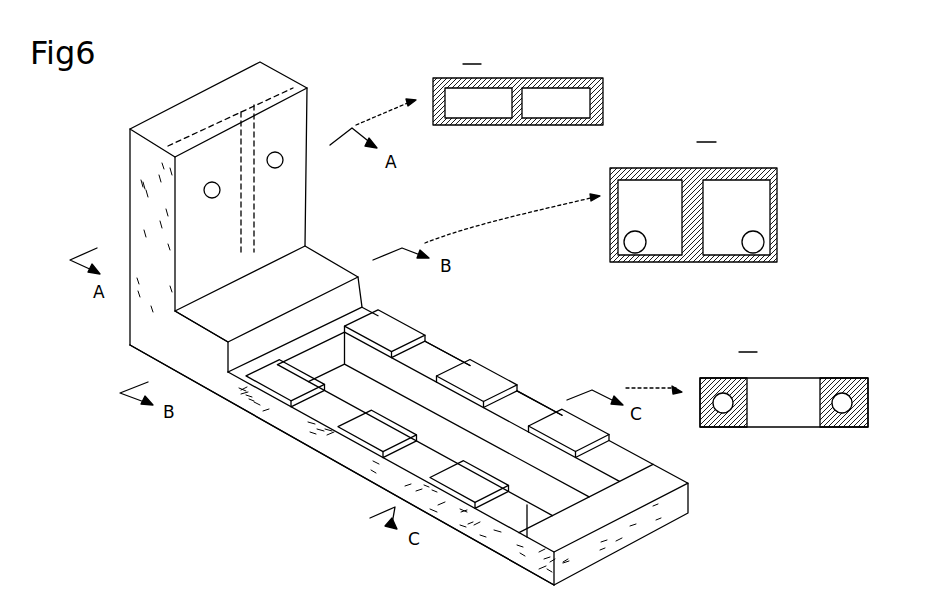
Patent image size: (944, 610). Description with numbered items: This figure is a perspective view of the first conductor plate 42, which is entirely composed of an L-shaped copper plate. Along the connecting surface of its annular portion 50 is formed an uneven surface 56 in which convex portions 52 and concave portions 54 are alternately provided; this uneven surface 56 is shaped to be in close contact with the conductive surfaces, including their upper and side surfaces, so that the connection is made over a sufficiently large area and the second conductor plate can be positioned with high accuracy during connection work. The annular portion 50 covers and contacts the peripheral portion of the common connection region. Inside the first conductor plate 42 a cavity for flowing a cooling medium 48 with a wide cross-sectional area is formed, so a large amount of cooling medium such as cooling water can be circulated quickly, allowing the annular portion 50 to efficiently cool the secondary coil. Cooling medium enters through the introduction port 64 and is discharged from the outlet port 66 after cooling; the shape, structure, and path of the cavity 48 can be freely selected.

The first conductor plate 42 is at (196, 457).
The cavity for flowing a cooling medium 48 is at (128, 192).
The annular portion 50 is at (380, 493).
The convex portions 52 is at (483, 383).
The concave portions 54 is at (423, 357).
The uneven surface 56 is at (543, 289).
The introduction port 64 is at (209, 182).
The outlet port 66 is at (275, 152).